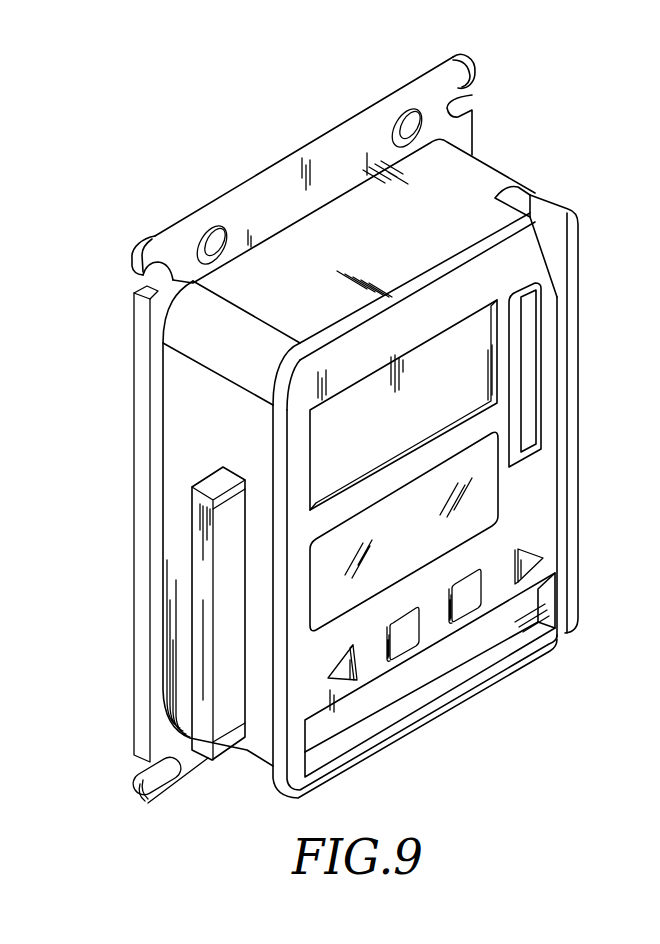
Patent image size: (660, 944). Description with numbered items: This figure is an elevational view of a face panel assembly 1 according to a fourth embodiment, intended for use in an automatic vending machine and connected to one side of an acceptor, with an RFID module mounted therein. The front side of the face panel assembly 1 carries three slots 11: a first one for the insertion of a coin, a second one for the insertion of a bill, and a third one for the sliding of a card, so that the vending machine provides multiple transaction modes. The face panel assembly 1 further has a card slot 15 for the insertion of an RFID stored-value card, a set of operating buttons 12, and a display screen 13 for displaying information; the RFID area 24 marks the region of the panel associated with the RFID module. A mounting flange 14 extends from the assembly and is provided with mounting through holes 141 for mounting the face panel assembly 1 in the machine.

The face panel assembly 1 is at (507, 140).
The mounting flange 14 is at (296, 157).
The mounting through holes 141 is at (223, 226).
The slot 11 is at (546, 224).
The display screen 13 is at (478, 328).
The RFID area panel 24 is at (493, 513).
The operating buttons 12 is at (540, 557).
The card slot 15 is at (224, 730).